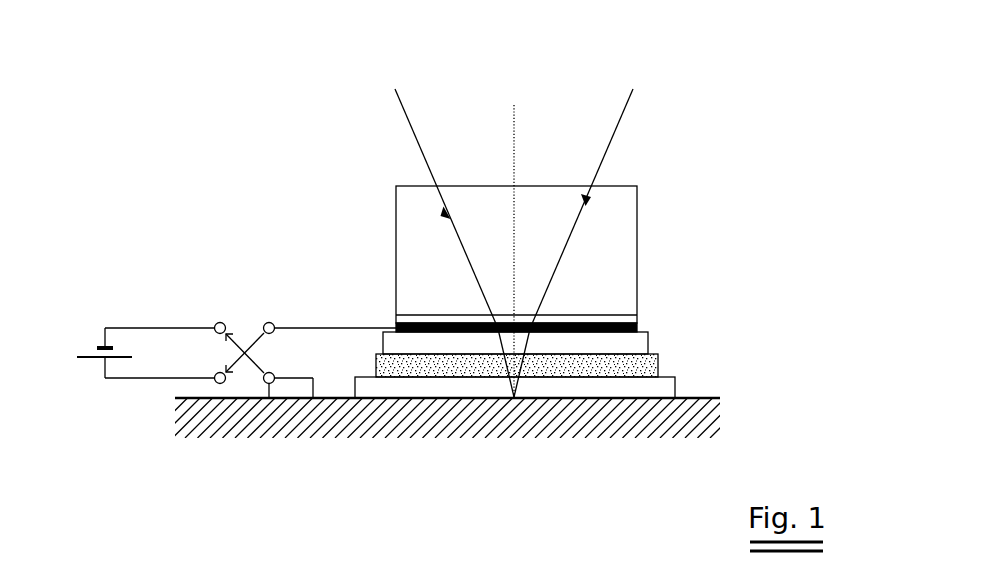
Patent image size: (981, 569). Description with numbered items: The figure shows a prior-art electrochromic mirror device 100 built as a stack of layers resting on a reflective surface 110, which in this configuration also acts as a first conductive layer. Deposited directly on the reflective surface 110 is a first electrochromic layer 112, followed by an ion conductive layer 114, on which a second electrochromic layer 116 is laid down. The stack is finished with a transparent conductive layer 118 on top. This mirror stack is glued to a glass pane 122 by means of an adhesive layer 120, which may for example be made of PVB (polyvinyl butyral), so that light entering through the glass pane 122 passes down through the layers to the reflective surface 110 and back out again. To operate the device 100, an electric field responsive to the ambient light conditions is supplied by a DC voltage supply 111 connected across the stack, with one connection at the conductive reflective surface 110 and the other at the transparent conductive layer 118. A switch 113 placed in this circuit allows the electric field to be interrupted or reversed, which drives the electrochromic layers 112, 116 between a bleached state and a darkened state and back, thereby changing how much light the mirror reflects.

The prior-art device 100 is at (178, 69).
The reflective surface 110 is at (460, 397).
The DC voltage supply 111 is at (79, 338).
The first electrochromic layer 112 is at (554, 360).
The switch 113 is at (275, 302).
The ion conductive layer 114 is at (560, 330).
The second electrochromic layer 116 is at (560, 300).
The transparent conductive layer 118 is at (567, 270).
The adhesive layer 120 is at (400, 320).
The glass pane 122 is at (613, 282).